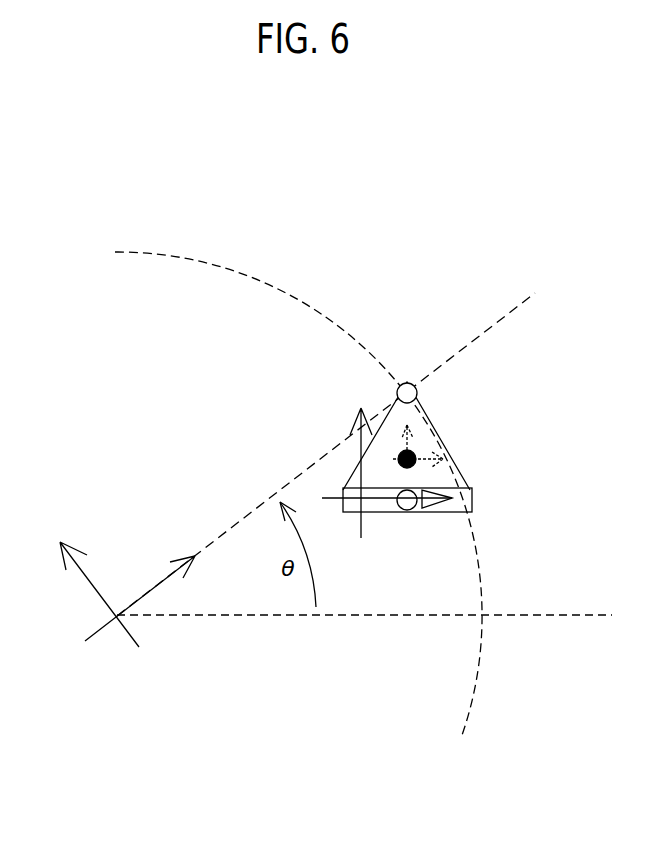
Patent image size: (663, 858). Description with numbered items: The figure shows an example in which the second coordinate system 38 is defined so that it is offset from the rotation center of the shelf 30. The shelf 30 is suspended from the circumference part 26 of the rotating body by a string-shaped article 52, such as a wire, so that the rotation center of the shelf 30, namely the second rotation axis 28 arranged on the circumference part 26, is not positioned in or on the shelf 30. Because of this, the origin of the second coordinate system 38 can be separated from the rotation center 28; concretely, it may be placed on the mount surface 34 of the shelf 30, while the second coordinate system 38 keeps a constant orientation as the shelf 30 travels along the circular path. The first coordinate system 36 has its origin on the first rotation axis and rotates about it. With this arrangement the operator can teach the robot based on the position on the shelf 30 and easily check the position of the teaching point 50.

The circumference part 26 is at (258, 277).
The second rotation axis 28 is at (408, 383).
The shelf 30 is at (472, 505).
The mount surface 34 is at (447, 489).
The first coordinate system 36 is at (87, 668).
The second coordinate system 38 is at (332, 442).
The teaching point 50 is at (408, 458).
The string-shaped article 52 is at (422, 412).